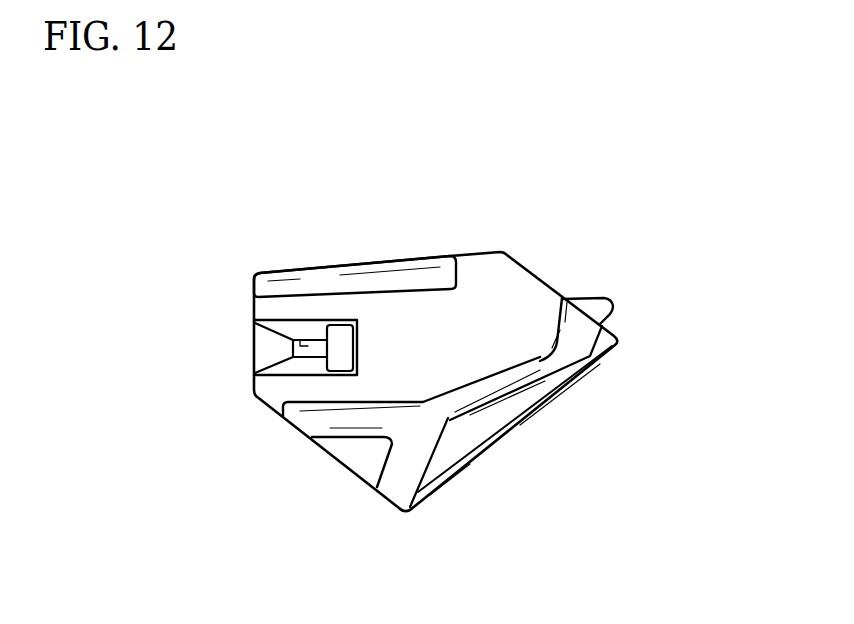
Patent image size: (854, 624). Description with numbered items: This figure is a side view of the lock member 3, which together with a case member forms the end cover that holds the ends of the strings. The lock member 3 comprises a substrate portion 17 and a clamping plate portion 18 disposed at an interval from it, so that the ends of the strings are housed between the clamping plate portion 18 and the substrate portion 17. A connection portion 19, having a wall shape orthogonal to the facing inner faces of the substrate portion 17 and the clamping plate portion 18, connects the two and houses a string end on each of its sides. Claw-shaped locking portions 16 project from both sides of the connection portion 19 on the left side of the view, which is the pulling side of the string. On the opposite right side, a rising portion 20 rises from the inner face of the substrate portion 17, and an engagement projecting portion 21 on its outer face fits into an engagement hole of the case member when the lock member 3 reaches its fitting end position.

The lock member 3 is at (470, 228).
The locking portions 16 is at (308, 343).
The substrate portion 17 is at (513, 397).
The clamping plate portion 18 is at (368, 265).
The connection portion 19 is at (407, 353).
The rising portion 20 is at (559, 298).
The engagement projecting portion 21 is at (597, 300).